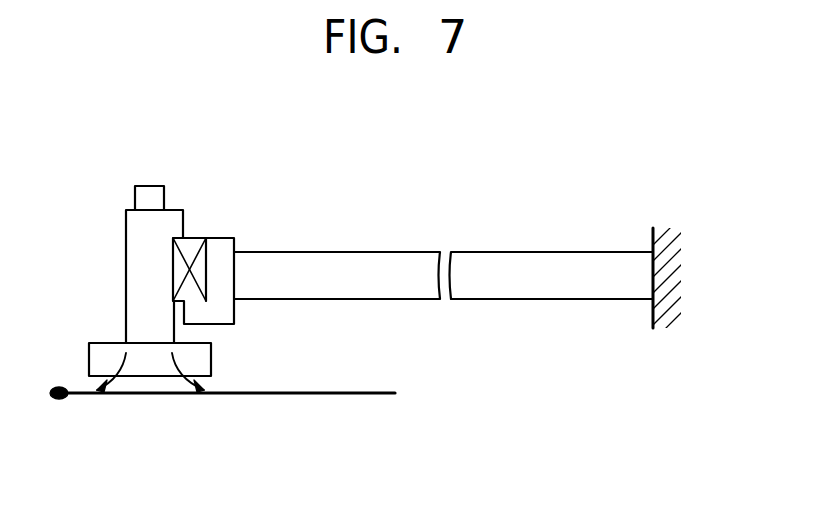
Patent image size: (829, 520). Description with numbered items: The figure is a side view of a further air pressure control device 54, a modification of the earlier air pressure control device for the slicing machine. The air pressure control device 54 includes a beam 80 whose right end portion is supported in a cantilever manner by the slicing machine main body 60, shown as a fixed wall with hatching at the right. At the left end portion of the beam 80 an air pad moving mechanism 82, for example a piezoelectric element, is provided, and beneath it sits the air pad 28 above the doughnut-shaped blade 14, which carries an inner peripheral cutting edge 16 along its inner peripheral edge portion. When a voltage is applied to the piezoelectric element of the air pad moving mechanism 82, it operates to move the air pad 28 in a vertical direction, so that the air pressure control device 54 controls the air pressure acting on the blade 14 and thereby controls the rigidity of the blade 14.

The blade 14 is at (299, 395).
The inner peripheral cutting edge 16 is at (60, 399).
The air pad 28 is at (102, 340).
The air pressure control device 54 is at (365, 207).
The slicing machine main body 60 is at (672, 278).
The beam 80 is at (407, 262).
The air pad moving mechanism 82 is at (190, 248).